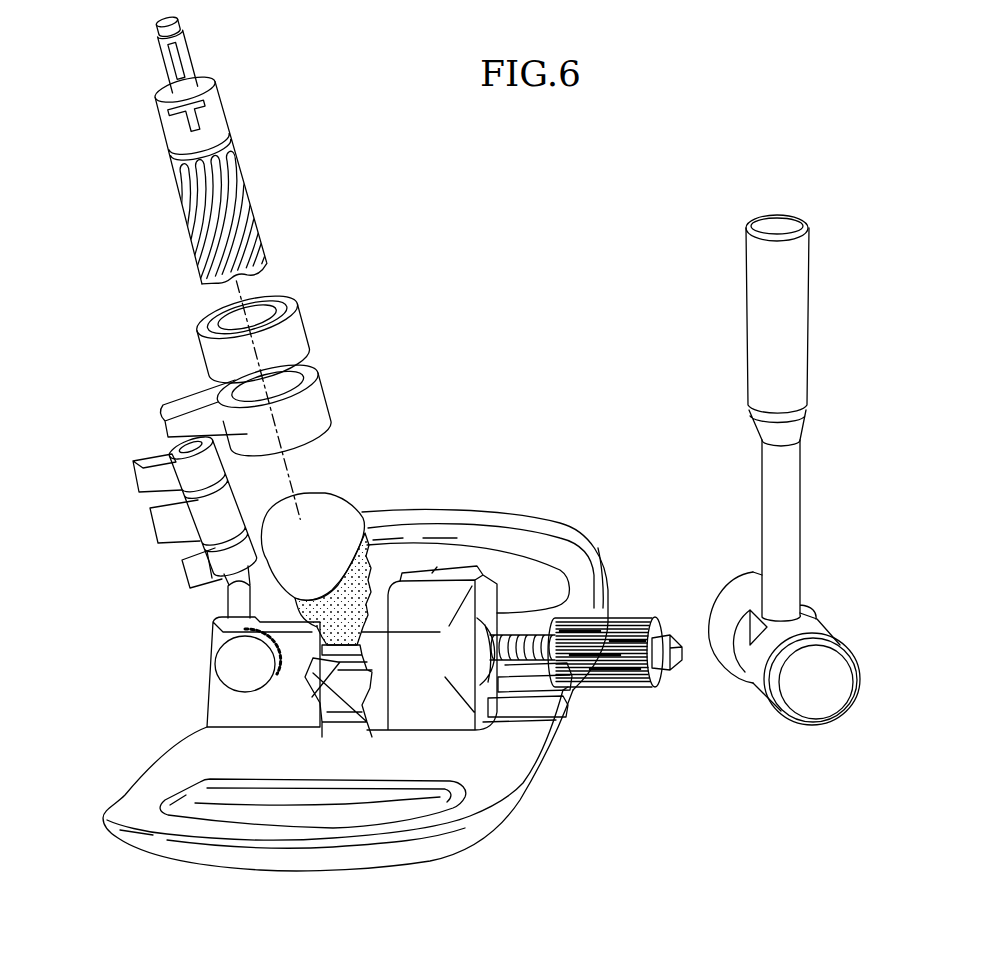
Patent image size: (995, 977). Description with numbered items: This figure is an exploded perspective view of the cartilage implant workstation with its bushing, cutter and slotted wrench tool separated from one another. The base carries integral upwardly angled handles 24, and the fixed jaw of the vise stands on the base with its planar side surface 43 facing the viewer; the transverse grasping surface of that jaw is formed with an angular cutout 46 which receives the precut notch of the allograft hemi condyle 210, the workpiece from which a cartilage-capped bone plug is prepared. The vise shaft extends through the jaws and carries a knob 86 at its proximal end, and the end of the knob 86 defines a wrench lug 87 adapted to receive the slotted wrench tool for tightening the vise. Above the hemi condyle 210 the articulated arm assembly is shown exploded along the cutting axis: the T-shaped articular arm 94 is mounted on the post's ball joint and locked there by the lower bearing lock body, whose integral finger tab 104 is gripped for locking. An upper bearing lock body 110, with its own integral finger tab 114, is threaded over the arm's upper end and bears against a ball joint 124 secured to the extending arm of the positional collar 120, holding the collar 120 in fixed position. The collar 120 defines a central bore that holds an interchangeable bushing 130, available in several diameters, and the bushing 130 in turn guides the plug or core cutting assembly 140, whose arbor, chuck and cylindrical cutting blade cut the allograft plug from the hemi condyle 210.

The plug or core cutting assembly 140 is at (249, 194).
The bushing 130 is at (297, 332).
The positional collar 120 is at (318, 403).
The ball joint 124 is at (170, 453).
The finger tab 114 is at (135, 477).
The upper bearing lock body 110 is at (182, 486).
The finger tab 104 is at (203, 578).
The articular arm 94 is at (268, 486).
The allograft hemi condyle 210 is at (335, 512).
The upwardly angled handles 24 is at (560, 525).
The wrench lug 87 is at (668, 629).
The knob 86 is at (652, 688).
The planar side surface 43 is at (218, 712).
The angular cutout 46 is at (323, 680).